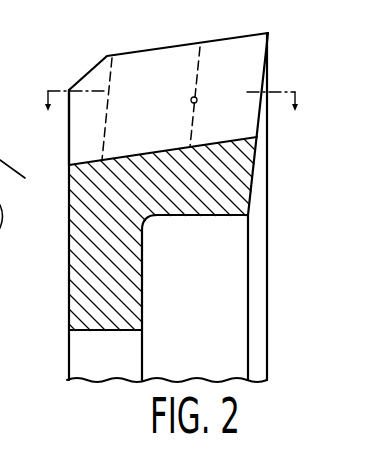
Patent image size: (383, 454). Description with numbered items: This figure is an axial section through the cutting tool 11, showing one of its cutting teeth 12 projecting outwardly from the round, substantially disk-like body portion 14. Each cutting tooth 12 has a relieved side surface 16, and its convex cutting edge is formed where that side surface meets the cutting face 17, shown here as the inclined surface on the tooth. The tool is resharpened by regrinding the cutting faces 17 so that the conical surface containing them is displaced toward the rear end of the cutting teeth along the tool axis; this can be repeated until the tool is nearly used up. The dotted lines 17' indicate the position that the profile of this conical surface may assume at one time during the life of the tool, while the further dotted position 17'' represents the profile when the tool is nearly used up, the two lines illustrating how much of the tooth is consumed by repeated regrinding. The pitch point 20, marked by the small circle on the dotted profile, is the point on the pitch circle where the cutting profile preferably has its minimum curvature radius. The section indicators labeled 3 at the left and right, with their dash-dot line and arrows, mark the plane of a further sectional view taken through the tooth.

The cutting tool 11 is at (85, 253).
The cutting teeth 12 is at (80, 137).
The body portion 14 is at (207, 201).
The relieved side surfaces 16 is at (138, 68).
The cutting faces 17 is at (275, 124).
The dotted-line profile position of cutting faces 17' is at (211, 97).
The profile position when tool is nearly used up 17'' is at (126, 109).
The pitch point 20 is at (197, 99).
The section line 3- 3 is at (168, 87).